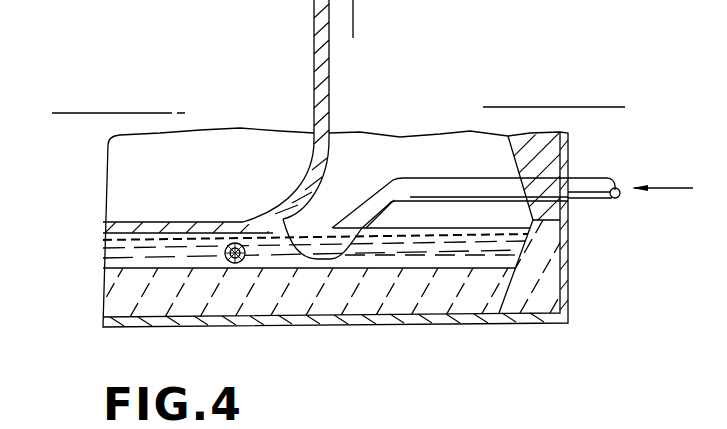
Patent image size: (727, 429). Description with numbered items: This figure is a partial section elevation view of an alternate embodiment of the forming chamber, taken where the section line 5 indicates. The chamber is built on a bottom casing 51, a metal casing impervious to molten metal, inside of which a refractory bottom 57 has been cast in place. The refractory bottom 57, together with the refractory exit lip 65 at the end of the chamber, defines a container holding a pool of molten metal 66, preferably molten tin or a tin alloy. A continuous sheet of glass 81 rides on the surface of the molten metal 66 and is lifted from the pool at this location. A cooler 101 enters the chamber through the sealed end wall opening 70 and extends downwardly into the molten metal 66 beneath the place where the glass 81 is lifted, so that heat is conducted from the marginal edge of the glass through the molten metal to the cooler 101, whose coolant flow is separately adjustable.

The section line 5- 5 is at (78, 140).
The bottom casing 51 is at (563, 270).
The refractory bottom 57 is at (115, 296).
The refractory exit lip 65 is at (547, 242).
The pool of molten metal 66 is at (110, 255).
The end wall opening 70 is at (540, 160).
The continuous sheet of glass 81 is at (316, 56).
The cooler 101 is at (472, 178).